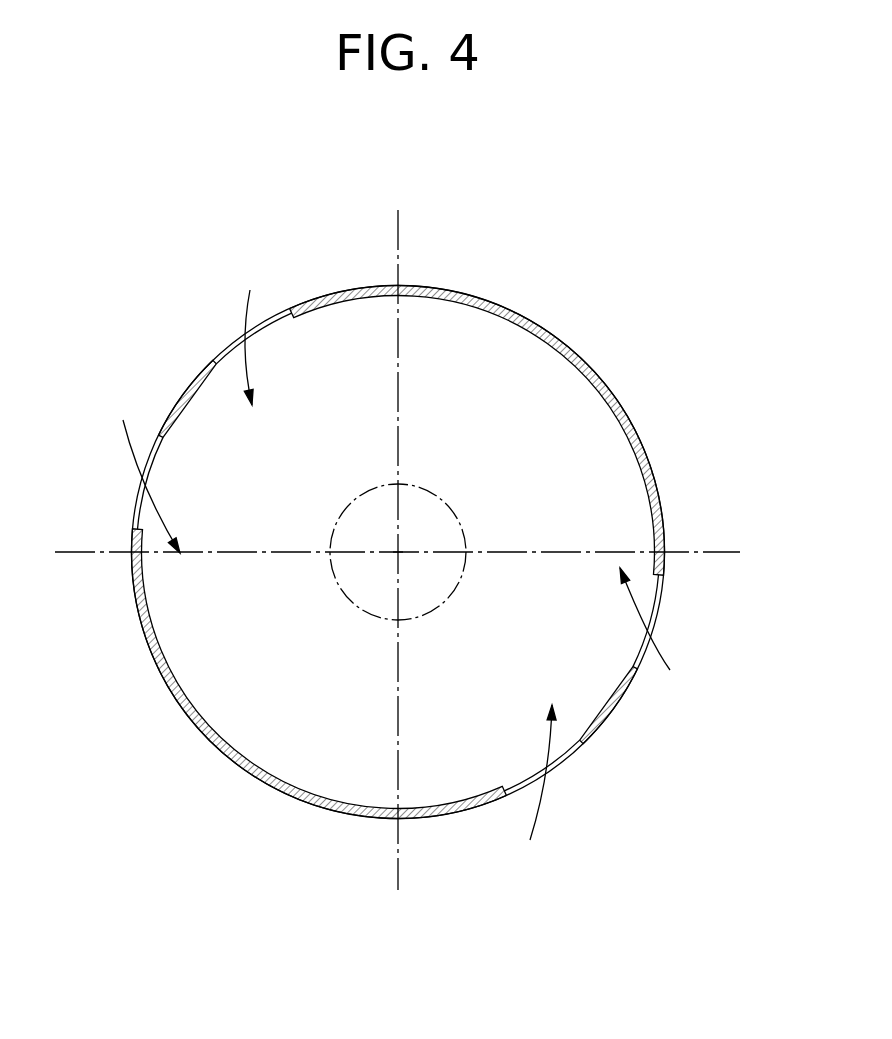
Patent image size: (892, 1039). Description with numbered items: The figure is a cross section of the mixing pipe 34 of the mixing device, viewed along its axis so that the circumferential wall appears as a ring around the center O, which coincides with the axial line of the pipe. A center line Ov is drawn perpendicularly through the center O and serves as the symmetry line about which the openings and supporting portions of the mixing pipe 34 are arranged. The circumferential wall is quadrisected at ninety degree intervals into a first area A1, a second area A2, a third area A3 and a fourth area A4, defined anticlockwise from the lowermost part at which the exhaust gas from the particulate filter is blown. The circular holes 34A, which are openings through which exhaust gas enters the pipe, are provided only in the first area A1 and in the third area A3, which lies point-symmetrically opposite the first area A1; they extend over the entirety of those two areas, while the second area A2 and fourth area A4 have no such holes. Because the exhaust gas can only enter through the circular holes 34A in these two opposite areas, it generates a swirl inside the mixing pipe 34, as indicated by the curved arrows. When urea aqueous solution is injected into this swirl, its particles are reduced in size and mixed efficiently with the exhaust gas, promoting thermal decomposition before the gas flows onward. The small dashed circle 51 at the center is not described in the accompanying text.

The mixing pipe 34 is at (580, 268).
The circular holes 34A is at (217, 360).
The central shaft / bore 51 is at (462, 518).
The center O is at (400, 551).
The center line Ov is at (400, 222).
The first area A1 is at (685, 760).
The second area A2 is at (640, 362).
The third area A3 is at (202, 288).
The fourth area A4 is at (135, 762).